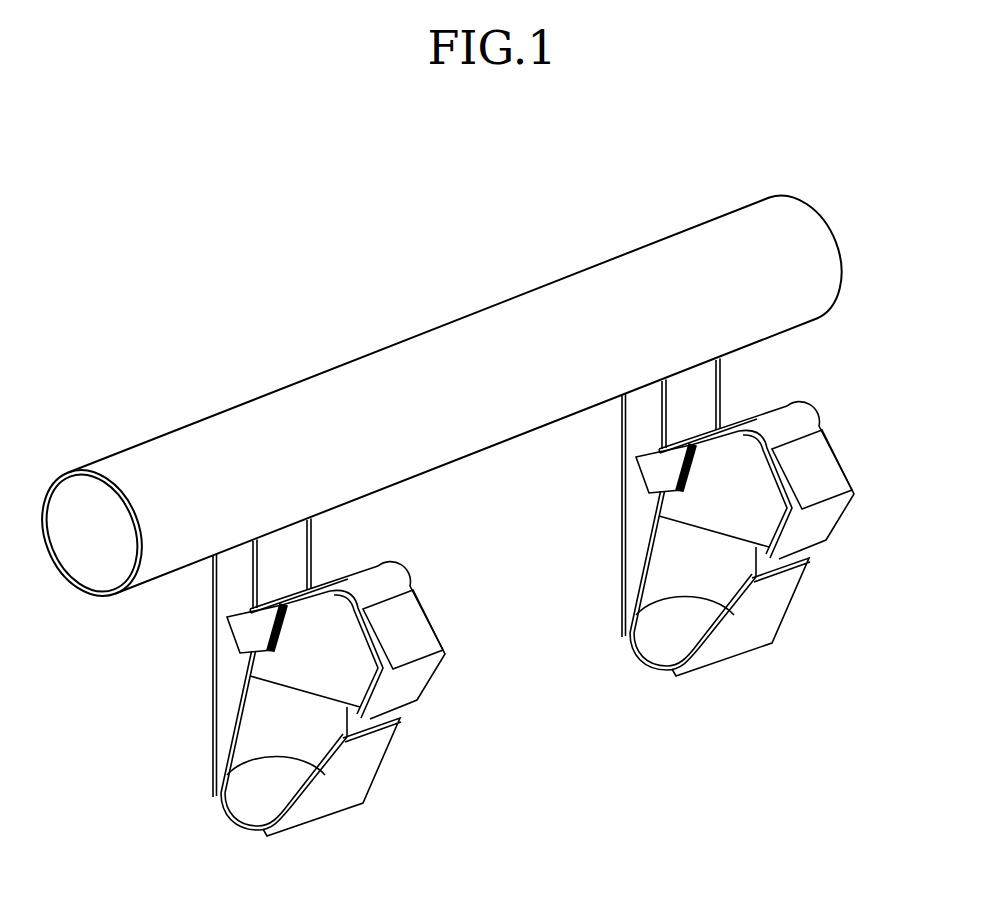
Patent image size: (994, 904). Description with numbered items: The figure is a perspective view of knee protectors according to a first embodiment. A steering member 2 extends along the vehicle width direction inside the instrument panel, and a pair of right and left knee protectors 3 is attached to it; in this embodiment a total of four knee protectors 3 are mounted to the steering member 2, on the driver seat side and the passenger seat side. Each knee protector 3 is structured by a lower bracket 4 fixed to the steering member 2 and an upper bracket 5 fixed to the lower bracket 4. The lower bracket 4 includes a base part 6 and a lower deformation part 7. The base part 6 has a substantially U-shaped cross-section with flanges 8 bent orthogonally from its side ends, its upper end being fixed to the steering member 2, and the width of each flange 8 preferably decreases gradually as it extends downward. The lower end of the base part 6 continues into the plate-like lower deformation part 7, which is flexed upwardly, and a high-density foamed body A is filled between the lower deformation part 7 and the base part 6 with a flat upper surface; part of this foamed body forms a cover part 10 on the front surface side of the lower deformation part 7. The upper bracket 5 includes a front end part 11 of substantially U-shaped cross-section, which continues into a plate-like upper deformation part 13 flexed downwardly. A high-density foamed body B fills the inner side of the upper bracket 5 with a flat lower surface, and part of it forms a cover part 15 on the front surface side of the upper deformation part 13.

The steering member 2 is at (476, 322).
The knee protector 3 is at (440, 715).
The lower bracket 4 is at (431, 660).
The upper bracket 5 is at (560, 492).
The base part 6 is at (216, 733).
The lower deformation part 7 is at (260, 760).
The flange 8 is at (213, 600).
The cover part 10 is at (375, 768).
The front end part 11 is at (265, 622).
The upper deformation part 13 is at (430, 494).
The cover part 15 is at (437, 617).